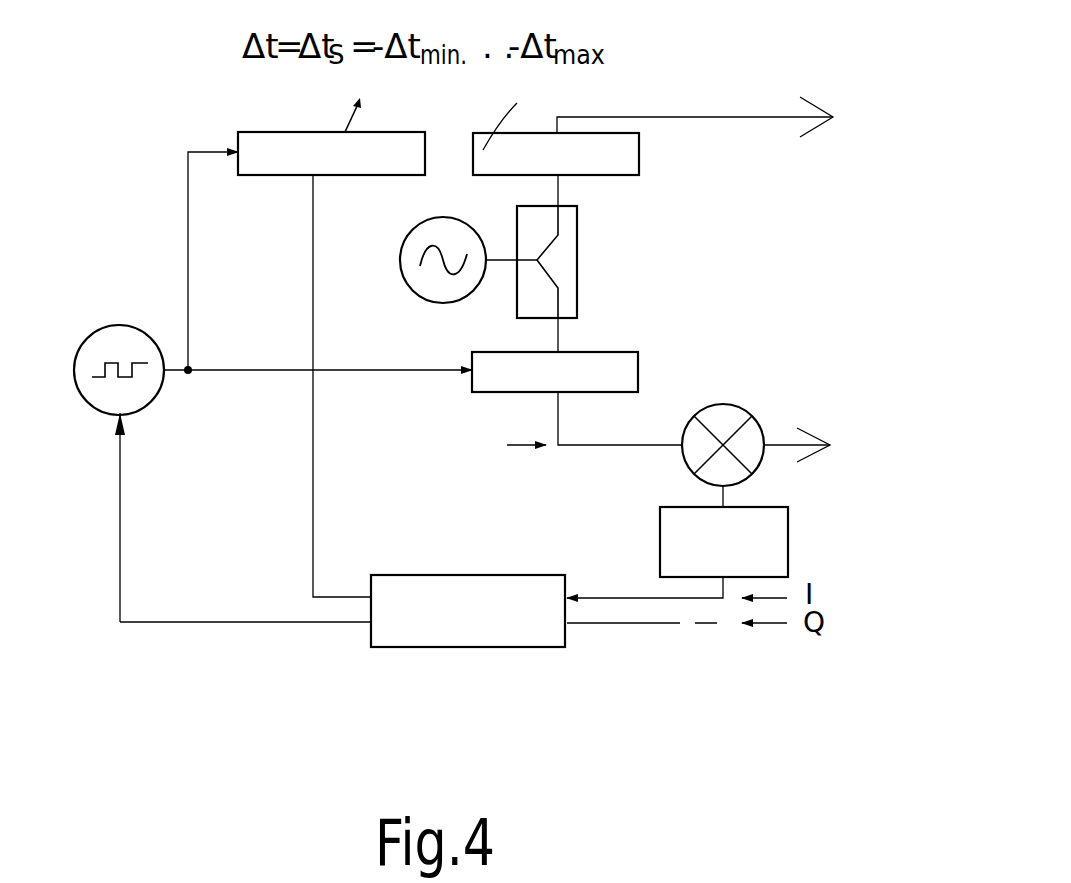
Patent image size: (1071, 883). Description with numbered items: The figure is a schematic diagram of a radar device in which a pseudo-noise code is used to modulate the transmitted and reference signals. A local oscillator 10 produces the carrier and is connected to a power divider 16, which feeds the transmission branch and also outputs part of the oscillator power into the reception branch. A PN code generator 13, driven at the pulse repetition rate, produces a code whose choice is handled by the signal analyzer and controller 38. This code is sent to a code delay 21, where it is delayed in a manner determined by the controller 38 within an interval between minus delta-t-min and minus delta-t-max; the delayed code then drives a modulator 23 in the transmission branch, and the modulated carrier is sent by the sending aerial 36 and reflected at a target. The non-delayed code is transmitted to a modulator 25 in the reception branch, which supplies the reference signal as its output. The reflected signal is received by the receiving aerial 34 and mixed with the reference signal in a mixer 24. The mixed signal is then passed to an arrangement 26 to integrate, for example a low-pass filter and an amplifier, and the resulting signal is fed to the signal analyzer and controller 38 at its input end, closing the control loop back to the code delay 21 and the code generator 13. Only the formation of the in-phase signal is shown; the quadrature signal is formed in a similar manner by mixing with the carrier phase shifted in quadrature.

The local oscillator 10 is at (410, 235).
The PN code generator 13 is at (108, 340).
The power divider 16 is at (577, 238).
The code delay 21 is at (247, 130).
The modulator 23 is at (639, 152).
The mixer 24 is at (743, 410).
The modulator 25 is at (638, 368).
The arrangement to integrate 26 is at (788, 543).
The receiving aerial 34 is at (820, 458).
The sending aerial 36 is at (833, 110).
The signal analyzer and controller 38 is at (457, 632).